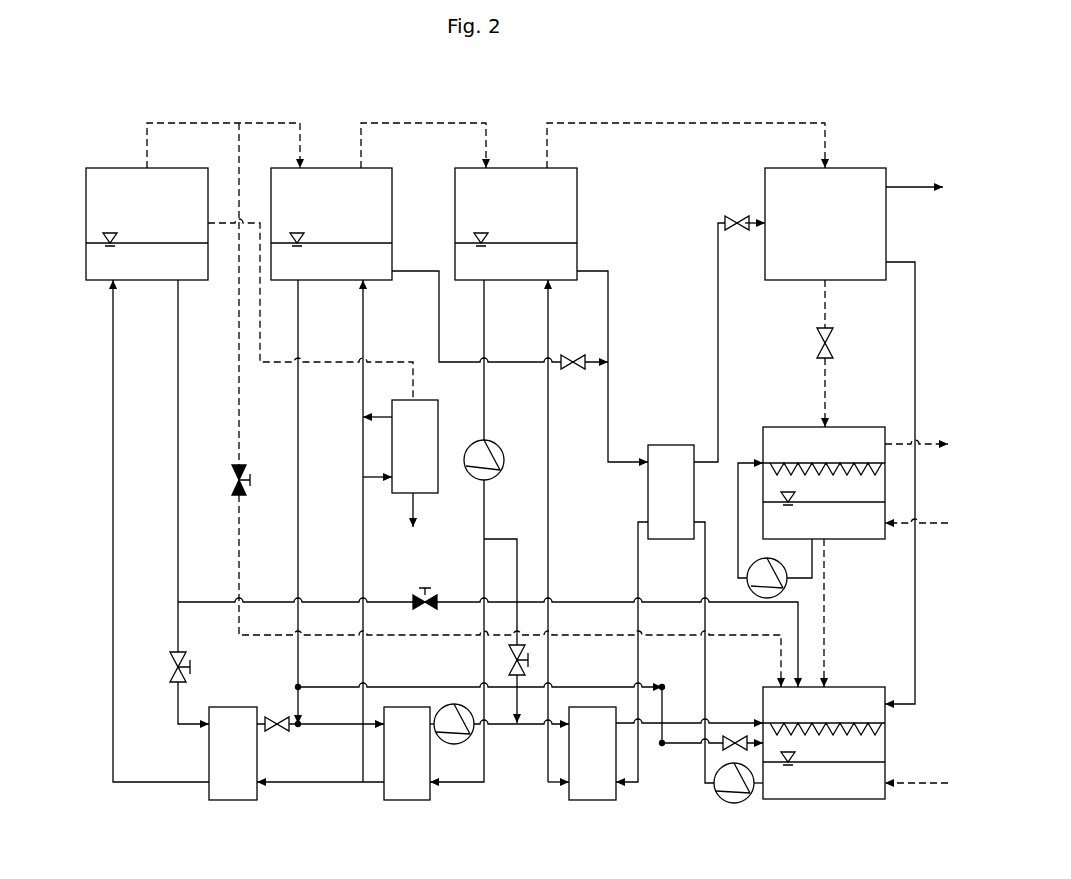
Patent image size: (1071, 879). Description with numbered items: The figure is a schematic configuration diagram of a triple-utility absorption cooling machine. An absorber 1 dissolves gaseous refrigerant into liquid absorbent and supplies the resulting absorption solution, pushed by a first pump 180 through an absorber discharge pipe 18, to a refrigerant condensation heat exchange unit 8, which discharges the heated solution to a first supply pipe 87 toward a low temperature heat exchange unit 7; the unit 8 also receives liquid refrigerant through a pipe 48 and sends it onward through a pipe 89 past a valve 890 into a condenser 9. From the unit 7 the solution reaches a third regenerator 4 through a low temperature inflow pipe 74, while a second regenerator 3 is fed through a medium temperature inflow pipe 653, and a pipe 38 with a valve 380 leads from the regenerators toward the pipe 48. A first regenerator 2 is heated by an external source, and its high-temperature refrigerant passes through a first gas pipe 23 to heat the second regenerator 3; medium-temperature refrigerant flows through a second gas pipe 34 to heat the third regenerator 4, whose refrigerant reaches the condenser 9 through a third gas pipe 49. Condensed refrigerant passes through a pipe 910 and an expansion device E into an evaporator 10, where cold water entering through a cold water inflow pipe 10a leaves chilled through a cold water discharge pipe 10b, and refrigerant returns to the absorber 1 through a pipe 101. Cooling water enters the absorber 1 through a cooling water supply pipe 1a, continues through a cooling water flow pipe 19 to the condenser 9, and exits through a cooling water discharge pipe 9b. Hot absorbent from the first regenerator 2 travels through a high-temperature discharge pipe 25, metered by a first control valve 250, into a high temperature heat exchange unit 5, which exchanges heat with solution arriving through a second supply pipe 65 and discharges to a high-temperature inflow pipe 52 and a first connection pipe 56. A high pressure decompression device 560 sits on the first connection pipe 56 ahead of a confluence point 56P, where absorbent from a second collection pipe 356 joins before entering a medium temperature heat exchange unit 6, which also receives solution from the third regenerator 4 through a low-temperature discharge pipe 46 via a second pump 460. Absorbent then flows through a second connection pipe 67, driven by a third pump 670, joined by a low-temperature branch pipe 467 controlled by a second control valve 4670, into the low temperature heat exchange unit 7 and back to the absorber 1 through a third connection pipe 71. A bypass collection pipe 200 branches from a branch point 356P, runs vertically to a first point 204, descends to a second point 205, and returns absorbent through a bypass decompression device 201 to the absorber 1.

The absorber 1 is at (840, 799).
The cooling water supply pipe 1a is at (917, 783).
The first regenerator 2 is at (148, 280).
The second regenerator 3 is at (331, 280).
The third regenerator 4 is at (517, 280).
The high temperature heat exchange unit 5 is at (233, 800).
The medium temperature heat exchange unit 6 is at (405, 800).
The low temperature heat exchange unit 7 is at (592, 800).
The refrigerant condensation heat exchange unit 8 is at (672, 445).
The condenser 9 is at (787, 280).
The cooling water discharge pipe 9b is at (906, 187).
The evaporator 10 is at (858, 539).
The cold water inflow pipe 10a is at (927, 527).
The cold water discharge pipe 10b is at (930, 440).
The absorber discharge pipe 18 is at (705, 661).
The cooling water flow pipe 19 is at (915, 614).
The first gas pipe 23 is at (204, 123).
The high-temperature discharge pipe 25 is at (178, 520).
The second gas pipe 34 is at (431, 123).
The line 38 is at (447, 362).
The low-temperature discharge pipe 46 is at (484, 508).
The line 48 is at (608, 296).
The third gas pipe 49 is at (618, 123).
The high-temperature inflow pipe 52 is at (113, 520).
The first connection pipe 56 is at (332, 724).
The confluence point 56P is at (299, 726).
The second supply pipe 65 is at (318, 782).
The second connection pipe 67 is at (497, 724).
The third connection pipe 71 is at (680, 723).
The low temperature inflow pipe 74 is at (548, 463).
The first supply pipe 87 is at (638, 563).
The line 89 is at (718, 374).
The line 101 is at (824, 623).
The first pump 180 is at (736, 803).
The bypass collection pipe 200 is at (394, 687).
The bypass decompression device 201 is at (730, 751).
The first point 204 is at (662, 687).
The second point 205 is at (662, 743).
The first control valve 250 is at (184, 656).
The second collection pipe 356 is at (298, 476).
The branch point 356P is at (300, 686).
The valve 380 is at (574, 354).
The second pump 460 is at (486, 440).
The low-temperature branch pipe 467 is at (533, 582).
The high pressure decompression device 560 is at (277, 717).
The medium temperature inflow pipe 653 is at (363, 554).
The third pump 670 is at (453, 704).
The valve 890 is at (735, 214).
The line 910 is at (827, 381).
The second control valve 4670 is at (528, 638).
The expansion device E is at (834, 332).